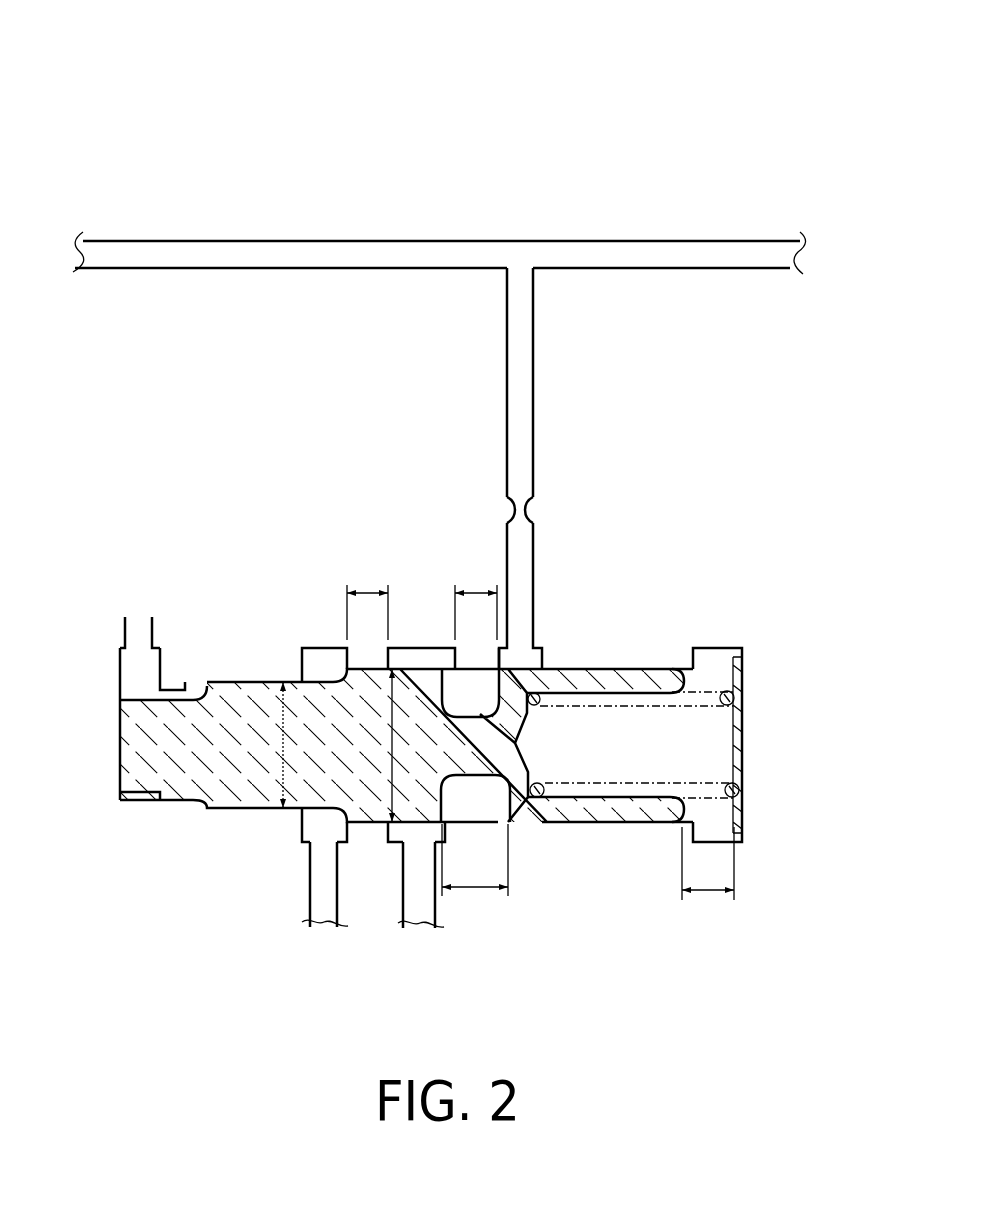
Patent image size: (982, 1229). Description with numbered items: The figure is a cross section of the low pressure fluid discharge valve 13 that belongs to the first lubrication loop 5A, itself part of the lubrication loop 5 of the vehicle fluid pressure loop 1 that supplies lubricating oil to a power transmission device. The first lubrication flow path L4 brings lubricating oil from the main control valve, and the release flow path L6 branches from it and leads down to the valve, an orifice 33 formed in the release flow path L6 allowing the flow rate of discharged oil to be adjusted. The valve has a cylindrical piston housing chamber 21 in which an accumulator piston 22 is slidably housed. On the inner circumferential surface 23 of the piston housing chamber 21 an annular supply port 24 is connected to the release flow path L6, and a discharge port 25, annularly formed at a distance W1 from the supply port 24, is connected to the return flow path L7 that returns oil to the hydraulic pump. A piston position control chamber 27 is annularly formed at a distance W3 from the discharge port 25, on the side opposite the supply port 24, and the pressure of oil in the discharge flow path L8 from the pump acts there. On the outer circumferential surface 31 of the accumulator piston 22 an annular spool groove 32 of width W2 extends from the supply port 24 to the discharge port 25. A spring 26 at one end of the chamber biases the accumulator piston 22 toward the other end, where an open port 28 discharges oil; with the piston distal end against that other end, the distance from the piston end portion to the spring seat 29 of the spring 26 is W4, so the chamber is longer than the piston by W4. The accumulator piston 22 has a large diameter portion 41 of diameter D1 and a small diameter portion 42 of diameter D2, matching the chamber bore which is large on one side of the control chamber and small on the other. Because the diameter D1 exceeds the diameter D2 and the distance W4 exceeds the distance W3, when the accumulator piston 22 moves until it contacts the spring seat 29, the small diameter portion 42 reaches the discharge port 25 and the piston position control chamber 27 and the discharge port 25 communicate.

The fluid pressure loop 1 is at (203, 68).
The lubrication loop 5 is at (207, 135).
The first lubrication loop 5A is at (302, 222).
The first lubrication flow path L4 is at (362, 240).
The release flow path L6 is at (535, 386).
The return flow path L7 is at (403, 900).
The discharge flow path L8 is at (310, 890).
The low pressure fluid discharge valve 13 is at (210, 634).
The piston housing chamber 21 is at (203, 686).
The accumulator piston 22 is at (130, 740).
The inner circumferential surface 23 is at (623, 670).
The supply port 24 is at (543, 656).
The discharge port 25 is at (390, 832).
The spring 26 is at (693, 778).
The piston position control chamber 27 is at (307, 828).
The open port 28 is at (135, 625).
The spring seat 29 is at (735, 730).
The outer circumferential surface 31 is at (607, 822).
The spool groove 32 is at (472, 780).
The orifice 33 is at (522, 493).
The large diameter portion 41 is at (403, 665).
The small diameter portion 42 is at (248, 680).
The diameter of large diameter portion D1 is at (378, 745).
The diameter of small diameter portion D2 is at (269, 745).
The distance between supply port and discharge port W1 is at (476, 599).
The width of spool groove W2 is at (475, 872).
The distance between discharge port and piston position control chamber W3 is at (367, 599).
The distance from piston end portion to spring seat W4 is at (708, 876).